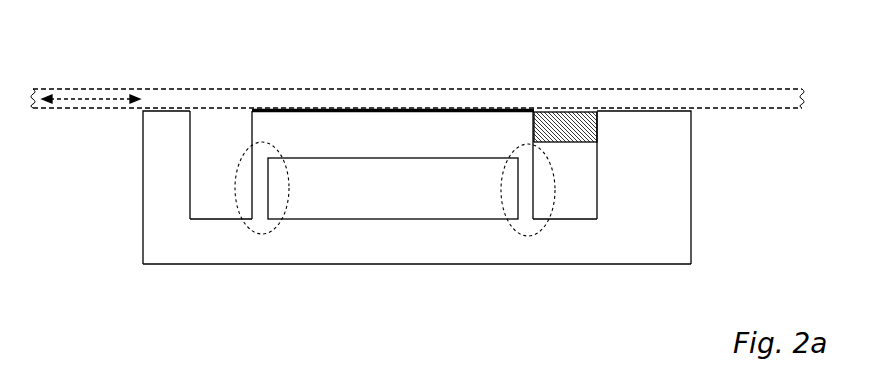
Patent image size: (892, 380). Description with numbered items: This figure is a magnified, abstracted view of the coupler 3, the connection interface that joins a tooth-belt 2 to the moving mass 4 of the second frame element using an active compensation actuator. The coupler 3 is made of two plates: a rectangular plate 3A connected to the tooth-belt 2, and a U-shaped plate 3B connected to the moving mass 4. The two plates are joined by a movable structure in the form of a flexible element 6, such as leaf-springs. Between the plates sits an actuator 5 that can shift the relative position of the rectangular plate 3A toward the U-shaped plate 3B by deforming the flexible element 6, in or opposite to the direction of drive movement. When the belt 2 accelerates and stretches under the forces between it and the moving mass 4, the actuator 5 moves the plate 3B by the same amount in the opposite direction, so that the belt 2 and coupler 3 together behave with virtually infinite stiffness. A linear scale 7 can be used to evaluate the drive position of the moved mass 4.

The tooth-belt 2 is at (265, 101).
The coupler 3 is at (704, 177).
The rectangular plate 3A is at (422, 140).
The U-shaped plate 3B is at (432, 250).
The moving mass 4 is at (533, 264).
The actuator 5 is at (565, 137).
The flexible element 6 is at (500, 195).
The linear scale 7 is at (117, 99).